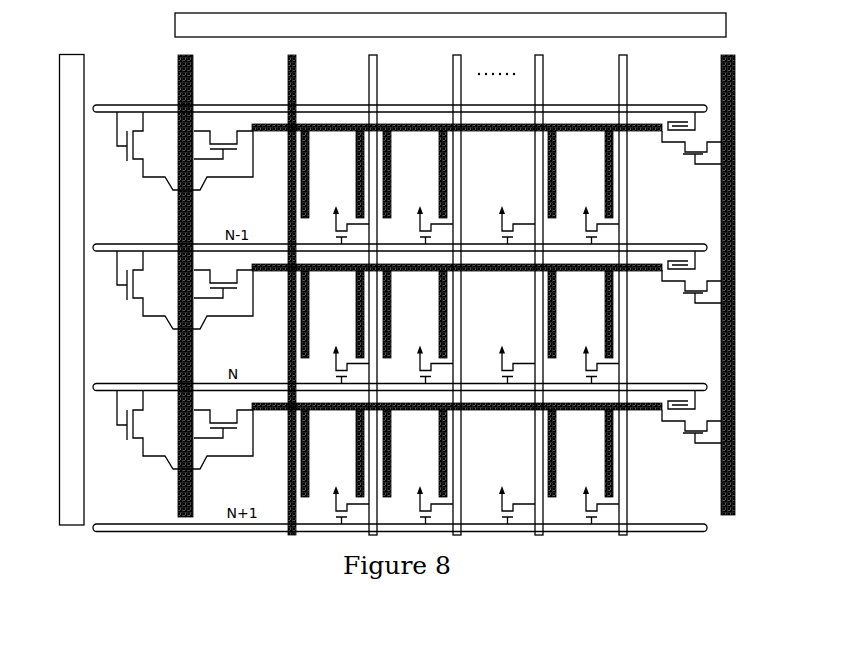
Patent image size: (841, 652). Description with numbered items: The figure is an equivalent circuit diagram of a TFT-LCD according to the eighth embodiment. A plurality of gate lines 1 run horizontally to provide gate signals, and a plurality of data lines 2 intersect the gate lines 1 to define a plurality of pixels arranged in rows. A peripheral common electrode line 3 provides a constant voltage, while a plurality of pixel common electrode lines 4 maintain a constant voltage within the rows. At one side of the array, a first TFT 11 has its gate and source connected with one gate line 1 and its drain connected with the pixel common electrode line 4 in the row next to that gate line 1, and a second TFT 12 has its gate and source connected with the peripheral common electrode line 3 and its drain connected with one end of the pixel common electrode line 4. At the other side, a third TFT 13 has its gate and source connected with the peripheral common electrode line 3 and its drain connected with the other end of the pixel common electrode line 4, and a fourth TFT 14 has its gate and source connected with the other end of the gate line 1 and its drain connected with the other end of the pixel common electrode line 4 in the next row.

The gate line 1 is at (157, 242).
The data line 2 is at (288, 87).
The peripheral common electrode line 3 is at (178, 87).
The pixel common electrode line 4 is at (308, 125).
The first TFT 11 is at (125, 158).
The second TFT 12 is at (232, 160).
The third TFT 13 is at (703, 167).
The fourth TFT 14 is at (680, 133).